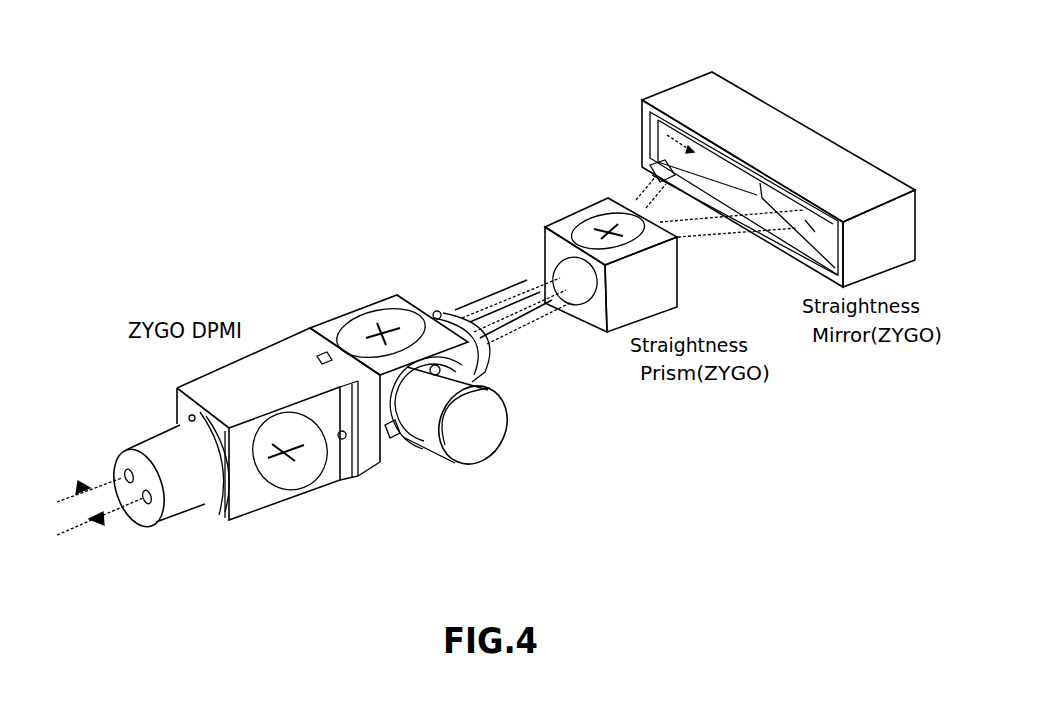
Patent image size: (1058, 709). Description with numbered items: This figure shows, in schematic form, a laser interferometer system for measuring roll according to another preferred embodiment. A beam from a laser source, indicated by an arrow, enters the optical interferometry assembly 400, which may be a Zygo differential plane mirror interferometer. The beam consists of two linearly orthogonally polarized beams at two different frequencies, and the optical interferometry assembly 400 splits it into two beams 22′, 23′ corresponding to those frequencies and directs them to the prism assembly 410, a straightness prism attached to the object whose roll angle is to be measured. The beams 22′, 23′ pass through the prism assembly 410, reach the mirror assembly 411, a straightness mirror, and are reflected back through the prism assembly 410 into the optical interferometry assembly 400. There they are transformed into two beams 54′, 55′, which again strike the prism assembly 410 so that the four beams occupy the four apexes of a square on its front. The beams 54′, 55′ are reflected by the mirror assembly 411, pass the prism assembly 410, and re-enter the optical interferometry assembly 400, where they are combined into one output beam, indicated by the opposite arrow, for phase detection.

The optical interferometry assembly 400 is at (302, 490).
The prism assembly 410 is at (597, 203).
The mirror assembly 411 is at (683, 84).
The beam 22′ is at (515, 283).
The beam 23′ is at (528, 300).
The beam 54′ is at (518, 323).
The beam 55′ is at (488, 305).